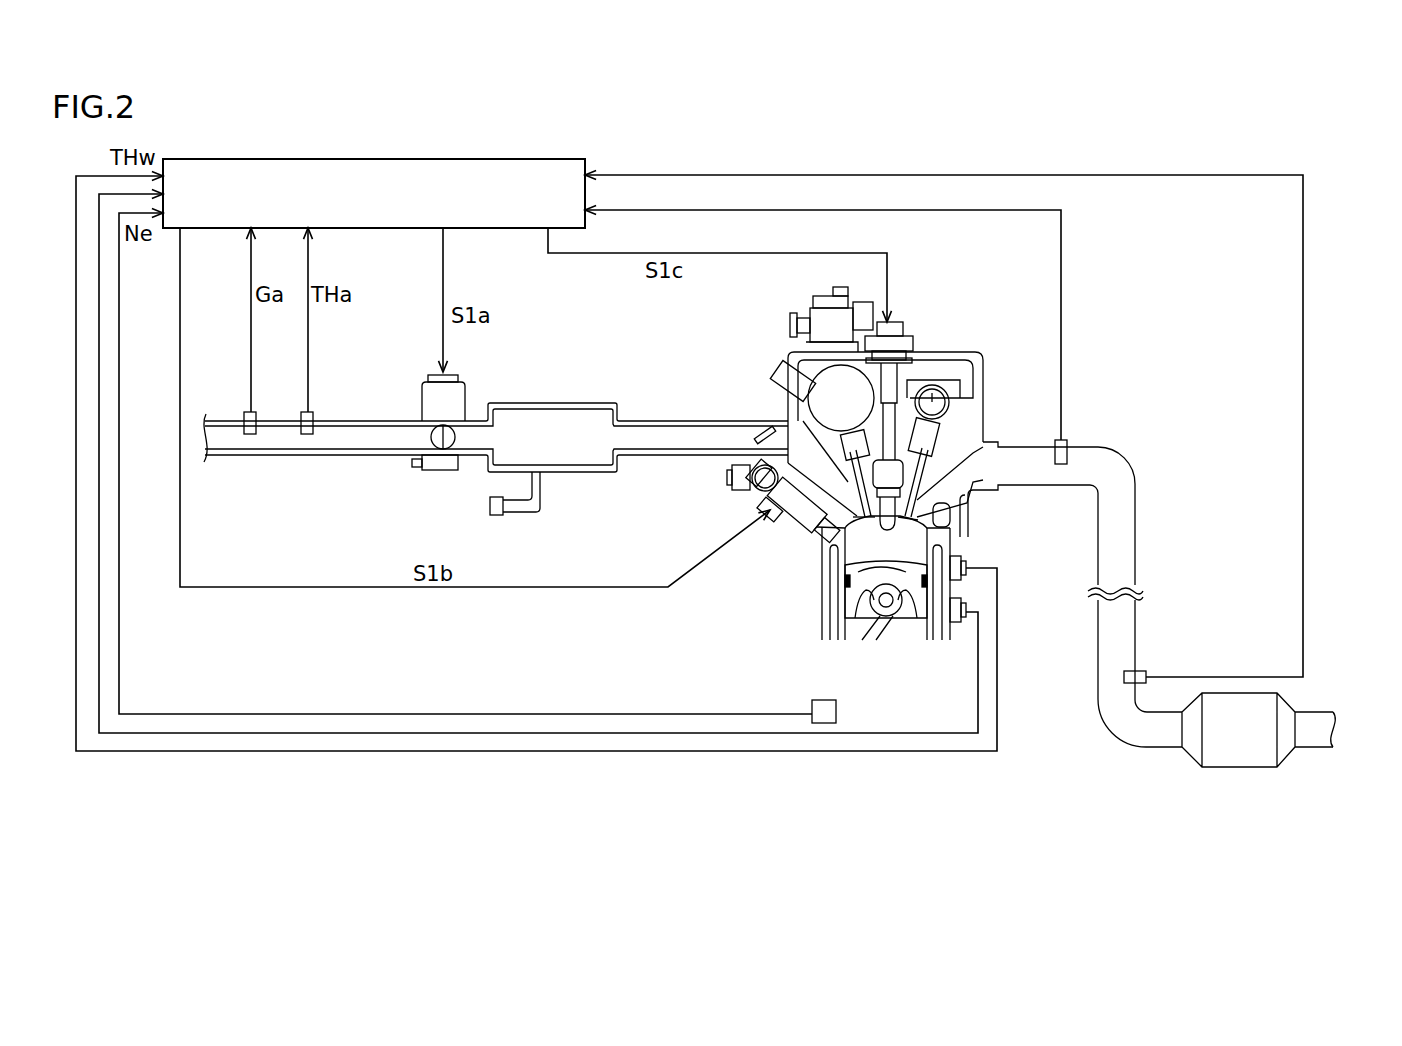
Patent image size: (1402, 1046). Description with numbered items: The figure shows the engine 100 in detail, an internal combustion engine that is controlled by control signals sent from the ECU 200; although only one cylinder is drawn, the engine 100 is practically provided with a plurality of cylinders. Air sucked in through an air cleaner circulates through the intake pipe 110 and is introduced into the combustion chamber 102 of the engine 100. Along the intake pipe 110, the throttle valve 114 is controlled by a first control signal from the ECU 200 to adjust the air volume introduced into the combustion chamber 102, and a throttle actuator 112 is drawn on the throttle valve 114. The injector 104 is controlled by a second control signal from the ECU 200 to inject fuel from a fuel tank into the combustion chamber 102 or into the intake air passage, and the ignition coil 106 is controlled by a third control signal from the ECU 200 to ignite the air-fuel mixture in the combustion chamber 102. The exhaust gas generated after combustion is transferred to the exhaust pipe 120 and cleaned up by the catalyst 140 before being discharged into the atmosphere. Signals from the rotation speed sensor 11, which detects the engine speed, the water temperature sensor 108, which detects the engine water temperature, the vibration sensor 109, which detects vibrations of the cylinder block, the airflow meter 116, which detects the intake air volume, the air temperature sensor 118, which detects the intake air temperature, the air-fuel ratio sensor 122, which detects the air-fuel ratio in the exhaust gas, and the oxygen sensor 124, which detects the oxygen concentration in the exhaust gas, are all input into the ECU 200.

The ECU 200 is at (472, 158).
The engine 100 is at (883, 465).
The combustion chamber 102 is at (905, 535).
The injector 104 is at (806, 510).
The ignition coil 106 is at (895, 322).
The water temperature sensor 108 is at (966, 566).
The vibration sensor 109 is at (966, 612).
The intake pipe 110 is at (584, 474).
The throttle motor 112 is at (468, 392).
The throttle valve 114 is at (438, 442).
The airflow meter 116 is at (244, 414).
The air temperature sensor 118 is at (315, 414).
The exhaust pipe 120 is at (1105, 450).
The air-fuel ratio sensor 122 is at (1054, 443).
The oxygen sensor 124 is at (1145, 673).
The catalyst 140 is at (1237, 768).
The rotation speed sensor 11 is at (825, 701).